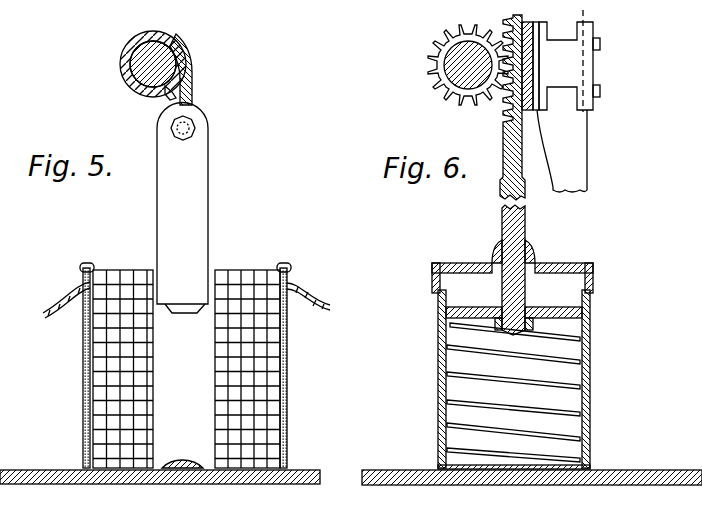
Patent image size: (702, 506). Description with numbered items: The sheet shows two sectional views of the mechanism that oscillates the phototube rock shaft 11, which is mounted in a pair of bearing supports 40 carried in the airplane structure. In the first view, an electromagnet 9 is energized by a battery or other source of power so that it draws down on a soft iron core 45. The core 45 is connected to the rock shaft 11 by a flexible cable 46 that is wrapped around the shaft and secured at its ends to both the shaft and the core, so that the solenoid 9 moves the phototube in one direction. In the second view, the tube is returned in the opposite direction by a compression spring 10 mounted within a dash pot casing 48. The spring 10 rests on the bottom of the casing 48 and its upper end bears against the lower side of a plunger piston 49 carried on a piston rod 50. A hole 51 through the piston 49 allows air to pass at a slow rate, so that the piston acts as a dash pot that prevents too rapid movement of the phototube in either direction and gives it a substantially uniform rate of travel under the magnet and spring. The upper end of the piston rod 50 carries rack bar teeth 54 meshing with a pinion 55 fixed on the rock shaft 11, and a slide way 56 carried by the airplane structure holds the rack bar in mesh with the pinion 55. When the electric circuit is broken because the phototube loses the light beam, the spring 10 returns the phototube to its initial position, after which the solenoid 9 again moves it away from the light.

In FIG. 5, the electromagnet 9 is at (102, 388).
In FIG. 6, the compression spring 10 is at (563, 405).
In FIG. 5, the rock shaft 11 is at (177, 53).
In FIG. 6, the rock shaft 11 is at (437, 53).
In FIG. 6, the bearing supports 40 is at (575, 147).
In FIG. 5, the soft iron core 45 is at (207, 253).
In FIG. 5, the flexible cable 46 is at (193, 80).
In FIG. 6, the dash pot casing 48 is at (537, 392).
In FIG. 6, the plunger piston 49 is at (478, 285).
In FIG. 6, the piston rod 50 is at (527, 234).
In FIG. 6, the hole 51 is at (556, 306).
In FIG. 6, the rack bar teeth 54 is at (504, 112).
In FIG. 6, the pinion 55 is at (436, 78).
In FIG. 6, the slide way 56 is at (537, 86).